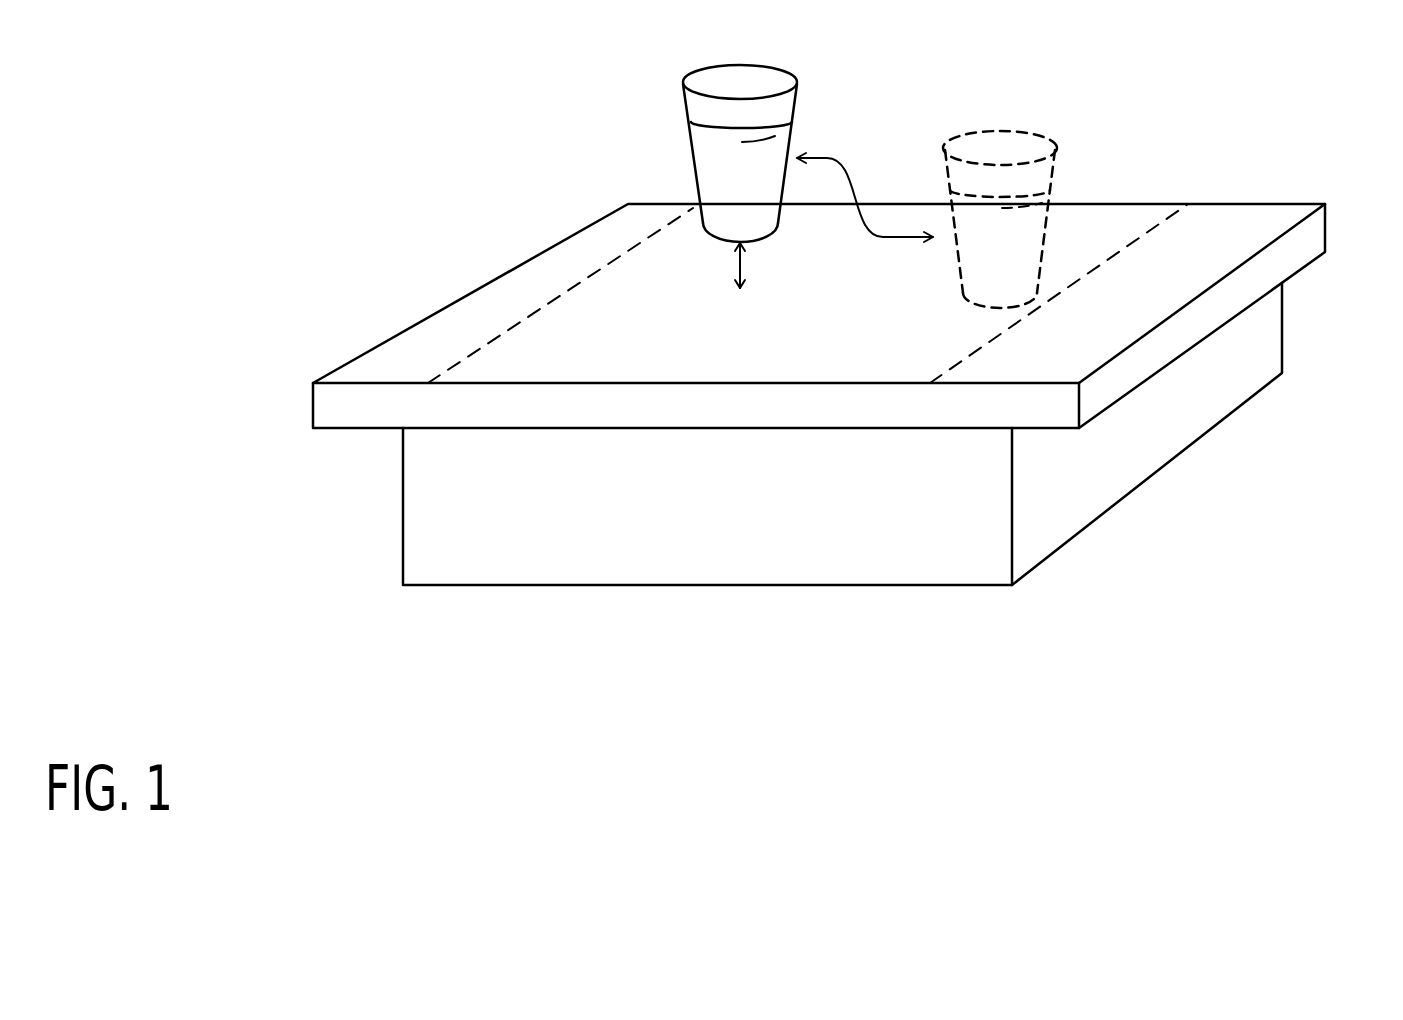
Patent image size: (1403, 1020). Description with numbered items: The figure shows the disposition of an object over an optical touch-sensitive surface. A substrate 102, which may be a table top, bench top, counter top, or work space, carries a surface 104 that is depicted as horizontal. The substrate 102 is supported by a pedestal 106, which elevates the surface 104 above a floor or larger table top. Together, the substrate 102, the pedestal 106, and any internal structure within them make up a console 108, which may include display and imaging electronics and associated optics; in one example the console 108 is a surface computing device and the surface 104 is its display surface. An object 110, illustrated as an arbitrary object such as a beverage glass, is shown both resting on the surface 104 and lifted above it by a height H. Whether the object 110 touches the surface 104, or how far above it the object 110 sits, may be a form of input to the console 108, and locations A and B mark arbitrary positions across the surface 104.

The substrate 102 is at (1327, 225).
The surface 104 is at (1237, 223).
The pedestal 106 is at (403, 542).
The console 108 is at (225, 313).
The object 110 is at (719, 182).